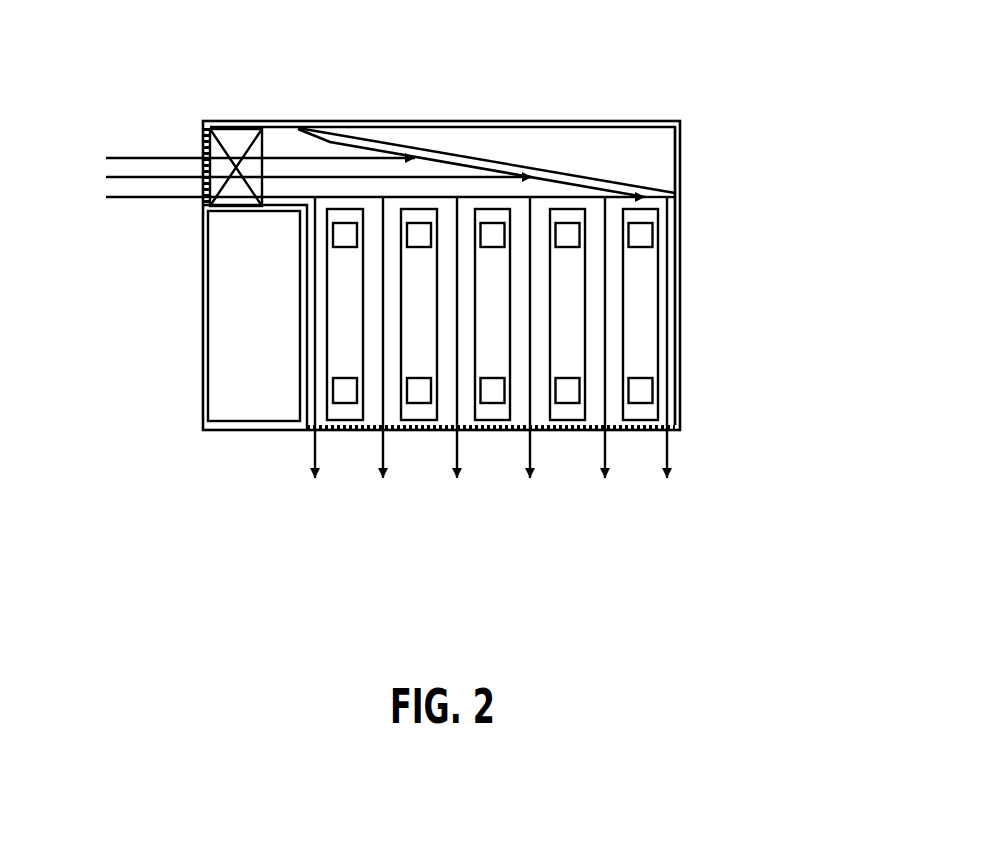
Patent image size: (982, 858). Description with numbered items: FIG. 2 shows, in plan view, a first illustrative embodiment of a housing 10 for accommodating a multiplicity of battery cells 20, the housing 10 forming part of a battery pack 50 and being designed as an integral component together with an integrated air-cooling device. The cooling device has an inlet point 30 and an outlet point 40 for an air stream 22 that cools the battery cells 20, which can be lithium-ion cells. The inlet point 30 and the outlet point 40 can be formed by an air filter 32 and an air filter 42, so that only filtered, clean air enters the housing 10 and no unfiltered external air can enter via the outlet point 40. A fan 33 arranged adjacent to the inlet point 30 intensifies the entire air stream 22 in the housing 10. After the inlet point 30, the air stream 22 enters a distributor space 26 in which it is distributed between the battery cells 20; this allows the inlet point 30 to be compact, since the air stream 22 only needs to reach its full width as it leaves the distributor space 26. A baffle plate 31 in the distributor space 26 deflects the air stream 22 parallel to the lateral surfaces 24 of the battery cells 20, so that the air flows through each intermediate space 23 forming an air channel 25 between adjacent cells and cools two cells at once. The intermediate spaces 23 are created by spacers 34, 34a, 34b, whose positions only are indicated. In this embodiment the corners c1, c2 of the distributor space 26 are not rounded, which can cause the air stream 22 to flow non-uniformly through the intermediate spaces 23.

The housing 10 is at (509, 227).
The battery pack 50 is at (688, 105).
The battery cells 20 is at (645, 285).
The air stream 22 is at (118, 205).
The intermediate space 23 is at (425, 361).
The air channel 25 is at (448, 395).
The lateral surfaces 24 is at (322, 350).
The distributor space 26 is at (288, 148).
The inlet point 30 is at (136, 134).
The air filter 32 is at (197, 137).
The baffle plate 31 is at (477, 152).
The fan 33 is at (222, 128).
The spacers 34 is at (683, 313).
The spacer 34a is at (683, 313).
The spacer 34b is at (618, 338).
The outlet point 40 is at (517, 477).
The air filter 42 is at (627, 438).
The corner c1 is at (688, 190).
The corner c2 is at (297, 218).